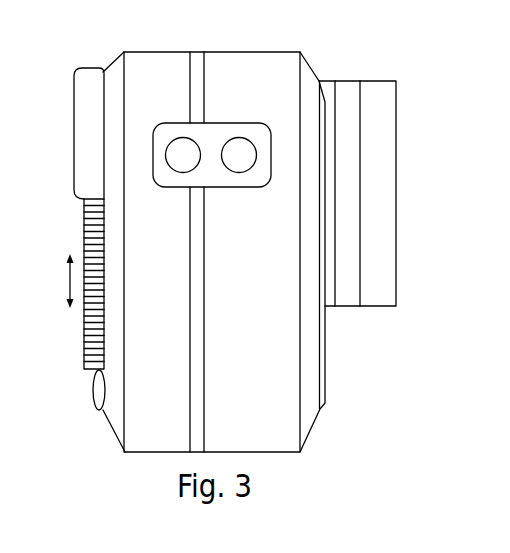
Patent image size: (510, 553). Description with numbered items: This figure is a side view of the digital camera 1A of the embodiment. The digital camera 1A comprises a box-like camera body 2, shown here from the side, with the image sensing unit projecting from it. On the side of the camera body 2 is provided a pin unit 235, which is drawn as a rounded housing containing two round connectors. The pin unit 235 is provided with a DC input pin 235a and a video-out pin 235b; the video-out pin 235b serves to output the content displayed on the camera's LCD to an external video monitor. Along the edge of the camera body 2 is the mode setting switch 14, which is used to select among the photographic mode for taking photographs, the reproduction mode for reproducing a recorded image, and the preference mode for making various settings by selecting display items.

The camera body 2 is at (324, 55).
The digital camera 1A is at (371, 446).
The mode setting switch 14 is at (84, 343).
The pin unit 235 is at (268, 37).
The DC input pin 235a is at (181, 145).
The video-out pin 235b is at (239, 144).